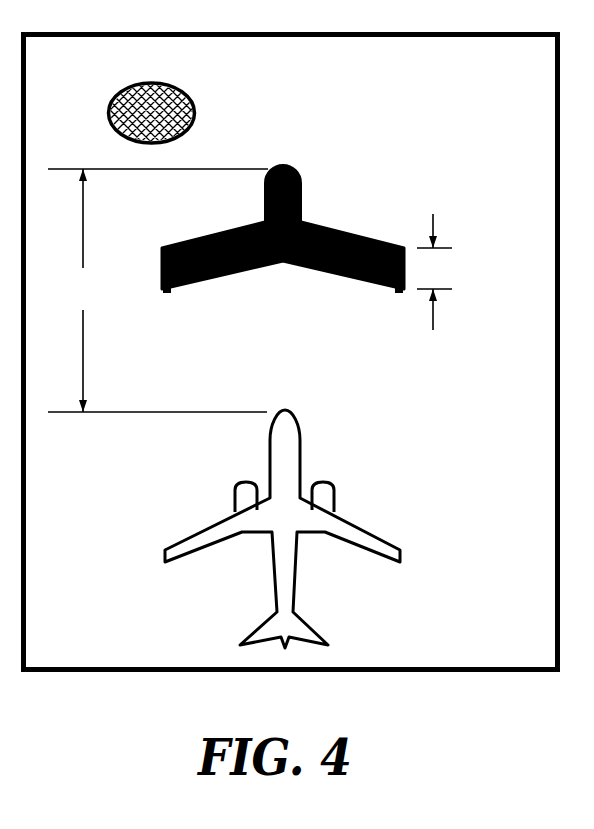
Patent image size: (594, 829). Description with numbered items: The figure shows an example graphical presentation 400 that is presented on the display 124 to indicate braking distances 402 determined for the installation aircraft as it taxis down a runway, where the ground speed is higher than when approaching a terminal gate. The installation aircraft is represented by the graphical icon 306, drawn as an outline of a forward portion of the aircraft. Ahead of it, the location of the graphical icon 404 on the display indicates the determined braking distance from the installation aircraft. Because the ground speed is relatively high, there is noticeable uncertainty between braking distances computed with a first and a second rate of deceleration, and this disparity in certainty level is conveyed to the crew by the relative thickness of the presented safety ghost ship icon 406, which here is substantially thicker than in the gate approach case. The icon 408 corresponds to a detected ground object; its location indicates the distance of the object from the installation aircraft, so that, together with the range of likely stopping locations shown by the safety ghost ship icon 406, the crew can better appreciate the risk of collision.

The display 124 is at (505, 642).
The graphical icon 306 is at (399, 554).
The graphical presentation 400 is at (490, 694).
The braking distances 402 is at (106, 338).
The graphical icon 404 is at (330, 226).
The safety ghost ship icon 406 is at (464, 258).
The icon 408 is at (201, 100).